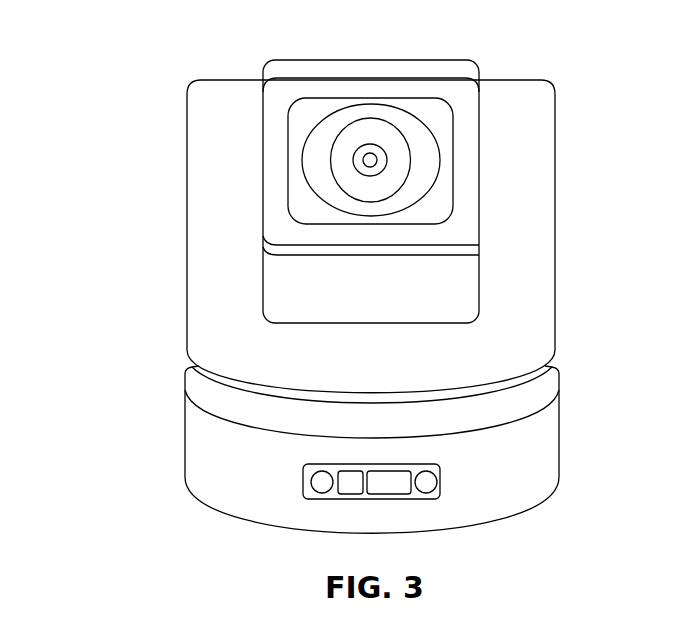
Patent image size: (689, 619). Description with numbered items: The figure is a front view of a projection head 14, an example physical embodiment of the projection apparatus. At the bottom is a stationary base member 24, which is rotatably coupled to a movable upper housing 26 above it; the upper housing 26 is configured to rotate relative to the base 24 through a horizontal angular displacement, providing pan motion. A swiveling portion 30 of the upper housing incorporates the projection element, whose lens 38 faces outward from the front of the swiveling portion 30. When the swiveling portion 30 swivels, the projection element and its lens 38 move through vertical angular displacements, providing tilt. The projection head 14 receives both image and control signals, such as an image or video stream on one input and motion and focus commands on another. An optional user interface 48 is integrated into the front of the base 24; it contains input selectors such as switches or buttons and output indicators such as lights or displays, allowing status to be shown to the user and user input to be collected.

The projection head 14 is at (138, 61).
The movable upper housing 26 is at (555, 230).
The stationary base member 24 is at (559, 428).
The user interface 48 is at (306, 500).
The swiveling portion 30 is at (338, 60).
The lens 38 is at (378, 132).